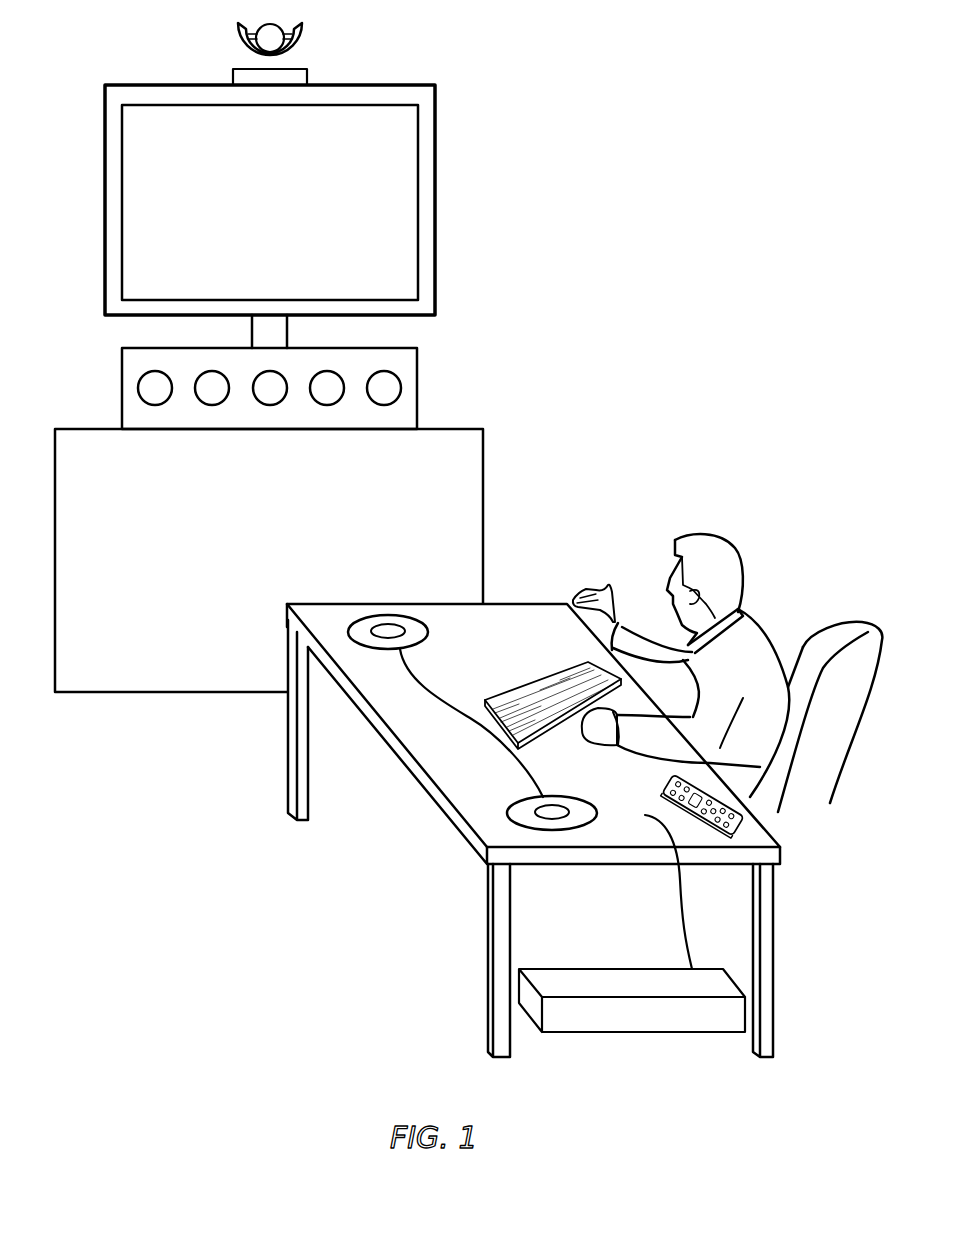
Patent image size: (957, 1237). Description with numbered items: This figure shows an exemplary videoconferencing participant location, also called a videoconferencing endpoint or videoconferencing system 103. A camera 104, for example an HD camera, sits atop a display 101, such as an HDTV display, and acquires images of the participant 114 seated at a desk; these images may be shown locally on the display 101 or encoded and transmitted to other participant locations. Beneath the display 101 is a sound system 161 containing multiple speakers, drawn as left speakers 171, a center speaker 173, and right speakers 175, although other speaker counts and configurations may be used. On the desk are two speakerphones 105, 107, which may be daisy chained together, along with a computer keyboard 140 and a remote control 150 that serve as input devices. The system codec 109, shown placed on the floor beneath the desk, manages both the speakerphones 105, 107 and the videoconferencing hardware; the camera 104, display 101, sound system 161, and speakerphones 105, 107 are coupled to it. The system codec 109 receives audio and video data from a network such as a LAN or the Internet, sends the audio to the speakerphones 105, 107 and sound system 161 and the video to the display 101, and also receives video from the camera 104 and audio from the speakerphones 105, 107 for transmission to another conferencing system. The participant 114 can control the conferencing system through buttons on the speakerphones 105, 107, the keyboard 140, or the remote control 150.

The display 101 is at (388, 150).
The videoconferencing system 103 is at (552, 86).
The camera 104 is at (298, 33).
The speakerphone 105 is at (525, 797).
The speakerphone 107 is at (428, 632).
The system codec 109 is at (657, 1032).
The participant 114 is at (728, 552).
The computer keyboard 140 is at (543, 680).
The remote control 150 is at (672, 782).
The sound system 161 is at (418, 363).
The left speakers 171 is at (235, 404).
The center speaker 173 is at (292, 404).
The right speakers 175 is at (409, 404).